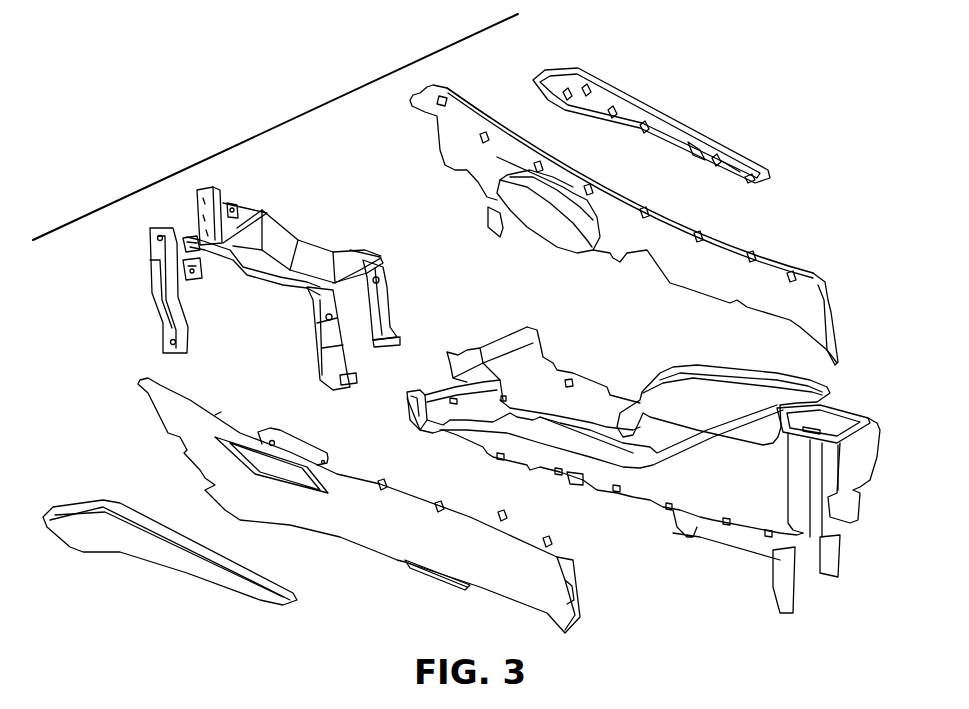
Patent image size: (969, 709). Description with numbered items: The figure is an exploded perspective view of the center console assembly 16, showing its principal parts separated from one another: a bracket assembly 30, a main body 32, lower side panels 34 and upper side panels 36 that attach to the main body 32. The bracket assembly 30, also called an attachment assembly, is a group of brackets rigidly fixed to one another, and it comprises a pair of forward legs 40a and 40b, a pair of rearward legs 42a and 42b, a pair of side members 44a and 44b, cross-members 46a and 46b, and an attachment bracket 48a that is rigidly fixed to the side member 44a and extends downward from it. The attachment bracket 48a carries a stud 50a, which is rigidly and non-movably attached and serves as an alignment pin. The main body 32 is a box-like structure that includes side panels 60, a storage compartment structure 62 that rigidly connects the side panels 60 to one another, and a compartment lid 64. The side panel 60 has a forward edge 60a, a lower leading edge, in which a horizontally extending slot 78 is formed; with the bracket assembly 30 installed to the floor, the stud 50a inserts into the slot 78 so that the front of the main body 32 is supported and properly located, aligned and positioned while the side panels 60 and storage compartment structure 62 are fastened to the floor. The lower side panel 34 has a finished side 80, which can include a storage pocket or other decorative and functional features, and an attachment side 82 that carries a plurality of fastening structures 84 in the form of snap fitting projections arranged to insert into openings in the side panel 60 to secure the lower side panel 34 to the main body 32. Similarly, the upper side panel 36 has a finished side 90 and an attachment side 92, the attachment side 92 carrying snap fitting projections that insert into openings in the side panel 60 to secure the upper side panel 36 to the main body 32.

The center console assembly 16 is at (257, 126).
The bracket assembly 30 is at (257, 285).
The main body 32 is at (607, 469).
The lower side panel 34 is at (488, 359).
The upper side panel 36 is at (406, 329).
The forward leg 40a is at (160, 274).
The forward leg 40b is at (200, 232).
The rearward leg 42a is at (330, 340).
The rearward leg 42b is at (382, 316).
The side member 44a is at (263, 287).
The side member 44b is at (337, 258).
The cross-member 46a is at (221, 203).
The cross-member 46b is at (378, 260).
The attachment bracket 48a is at (193, 272).
The stud 50a is at (168, 310).
The side panel 60 is at (568, 432).
The forward edge 60a is at (404, 408).
The storage compartment structure 62 is at (740, 538).
The compartment lid 64 is at (773, 380).
The slot 78 is at (430, 440).
The finished side 80 is at (285, 510).
The attachment side 82 is at (703, 265).
The fastening structures 84 is at (482, 138).
The finished side 90 is at (130, 540).
The attachment side 92 is at (595, 100).